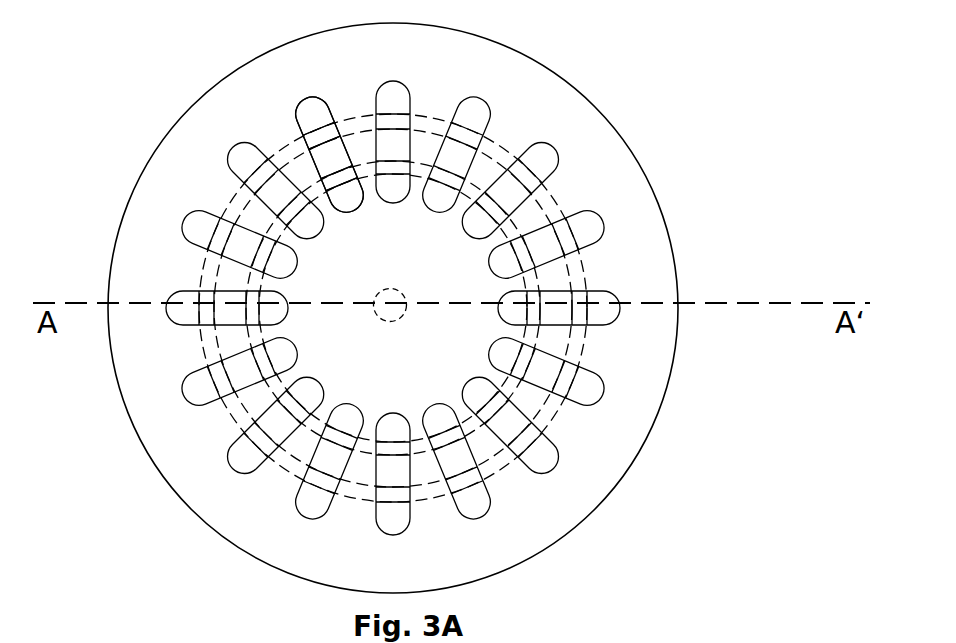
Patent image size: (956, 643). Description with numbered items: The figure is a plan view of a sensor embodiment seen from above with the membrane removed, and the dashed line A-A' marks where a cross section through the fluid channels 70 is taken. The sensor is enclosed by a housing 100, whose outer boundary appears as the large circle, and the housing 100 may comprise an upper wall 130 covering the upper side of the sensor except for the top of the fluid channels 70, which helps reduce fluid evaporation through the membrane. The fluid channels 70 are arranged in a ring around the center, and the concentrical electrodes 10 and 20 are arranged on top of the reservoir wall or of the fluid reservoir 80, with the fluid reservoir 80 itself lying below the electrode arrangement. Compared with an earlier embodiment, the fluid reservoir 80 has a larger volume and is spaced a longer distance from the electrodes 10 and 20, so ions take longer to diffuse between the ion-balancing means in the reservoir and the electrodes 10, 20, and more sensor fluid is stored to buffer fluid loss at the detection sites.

The housing 100 is at (659, 208).
The fluid channels 70 is at (587, 220).
The electrode 10 is at (424, 170).
The electrode 20 is at (553, 203).
The fluid reservoir 80 is at (378, 318).
The upper wall 130 is at (358, 247).